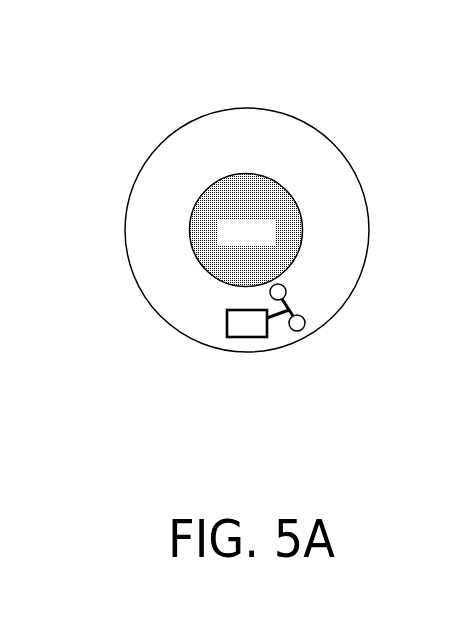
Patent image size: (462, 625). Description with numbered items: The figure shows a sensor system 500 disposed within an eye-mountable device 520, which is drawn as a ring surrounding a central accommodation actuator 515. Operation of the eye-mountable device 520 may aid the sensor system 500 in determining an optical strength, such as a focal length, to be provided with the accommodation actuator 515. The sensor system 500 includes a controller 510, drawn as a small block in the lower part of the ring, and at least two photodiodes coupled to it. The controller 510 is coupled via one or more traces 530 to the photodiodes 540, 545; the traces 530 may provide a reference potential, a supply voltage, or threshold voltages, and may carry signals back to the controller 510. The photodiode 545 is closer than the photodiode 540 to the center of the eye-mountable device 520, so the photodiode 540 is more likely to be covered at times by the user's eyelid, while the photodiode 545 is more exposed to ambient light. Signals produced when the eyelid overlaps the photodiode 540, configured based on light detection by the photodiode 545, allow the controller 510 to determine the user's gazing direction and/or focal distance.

The sensor system 500 is at (221, 224).
The controller 510 is at (228, 334).
The accommodation actuator 515 is at (264, 242).
The eye-mountable device 520 is at (295, 118).
The traces 530 is at (276, 323).
The photodiode 540 is at (305, 325).
The photodiode 545 is at (285, 286).